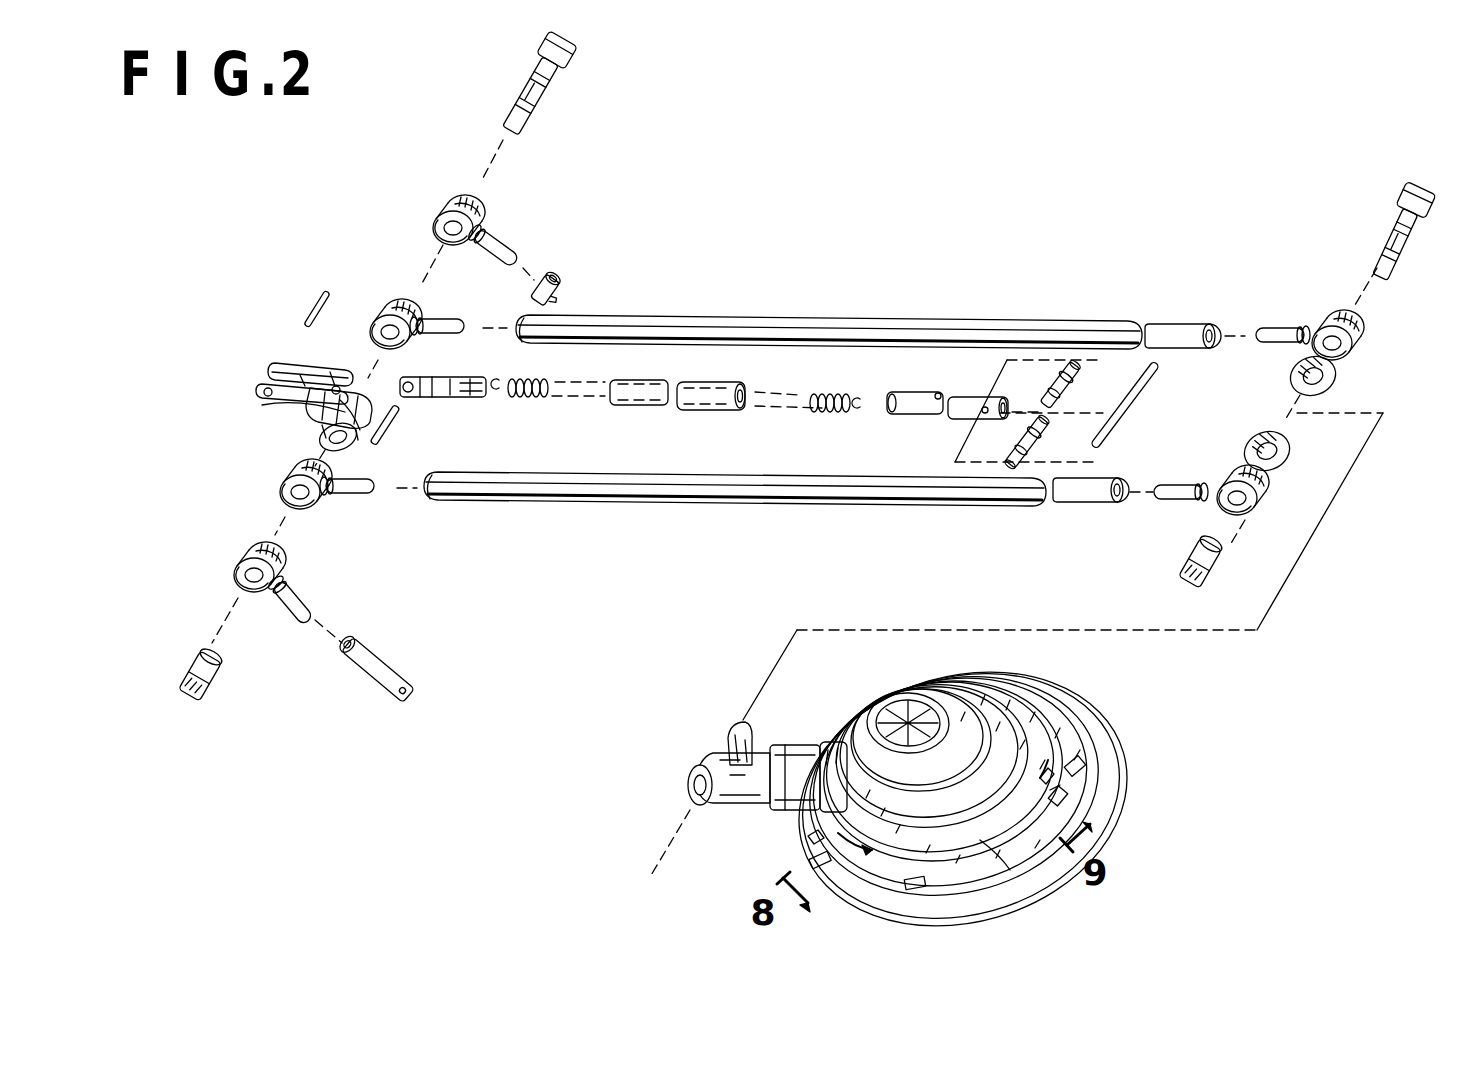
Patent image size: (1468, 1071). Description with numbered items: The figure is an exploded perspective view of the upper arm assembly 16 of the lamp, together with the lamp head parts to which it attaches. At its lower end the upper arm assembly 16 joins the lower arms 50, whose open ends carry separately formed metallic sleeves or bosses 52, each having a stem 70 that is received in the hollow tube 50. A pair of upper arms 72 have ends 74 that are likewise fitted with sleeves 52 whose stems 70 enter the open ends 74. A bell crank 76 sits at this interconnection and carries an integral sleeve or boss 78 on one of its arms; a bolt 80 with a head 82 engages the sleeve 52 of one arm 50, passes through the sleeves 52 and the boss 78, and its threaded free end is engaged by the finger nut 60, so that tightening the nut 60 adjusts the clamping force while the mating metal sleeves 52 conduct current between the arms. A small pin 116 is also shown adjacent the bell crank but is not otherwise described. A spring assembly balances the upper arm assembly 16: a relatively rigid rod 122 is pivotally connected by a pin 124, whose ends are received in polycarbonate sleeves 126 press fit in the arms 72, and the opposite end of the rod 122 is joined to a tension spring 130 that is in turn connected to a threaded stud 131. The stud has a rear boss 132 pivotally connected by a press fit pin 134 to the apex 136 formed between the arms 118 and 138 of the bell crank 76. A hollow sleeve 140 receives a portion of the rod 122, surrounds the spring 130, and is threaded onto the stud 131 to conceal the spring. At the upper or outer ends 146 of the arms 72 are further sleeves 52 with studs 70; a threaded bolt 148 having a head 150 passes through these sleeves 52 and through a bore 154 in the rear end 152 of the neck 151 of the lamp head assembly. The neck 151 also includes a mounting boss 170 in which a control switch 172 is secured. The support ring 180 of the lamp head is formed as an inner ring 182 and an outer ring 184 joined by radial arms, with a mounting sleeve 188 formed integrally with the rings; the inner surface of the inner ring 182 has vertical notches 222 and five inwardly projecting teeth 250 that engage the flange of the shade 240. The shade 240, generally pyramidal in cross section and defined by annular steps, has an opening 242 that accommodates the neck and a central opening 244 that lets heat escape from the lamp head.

The upper arm assembly 16 is at (555, 506).
The arm 50 is at (556, 282).
The sleeve 52 is at (445, 207).
The finger nut 60 is at (203, 687).
The stem 70 is at (507, 242).
The upper arm 72 is at (682, 318).
The arm end 74 is at (527, 343).
The bell crank 76 is at (262, 405).
The boss 78 is at (350, 395).
The bolt 80 is at (548, 92).
The bolt head 82 is at (572, 56).
The pin 116 is at (312, 292).
The bell crank arm 118 is at (317, 363).
The rod 122 is at (960, 419).
The pin 124 is at (1143, 407).
The polycarbonate sleeve 126 is at (1048, 375).
The tension spring 130 is at (533, 397).
The threaded stud 131 is at (452, 390).
The rear boss 132 is at (425, 377).
The press fit pin 134 is at (392, 422).
The apex 136 is at (372, 383).
The bell crank arm 138 is at (330, 410).
The hollow sleeve 140 is at (692, 412).
The outer arm end 146 is at (1190, 322).
The threaded bolt 148 is at (1395, 222).
The bolt head 150 is at (1410, 183).
The neck 151 is at (763, 745).
The rear end 152 is at (1183, 583).
The bore 154 is at (1293, 374).
The mounting boss 170 is at (705, 765).
The control switch 172 is at (725, 740).
The support ring 180 is at (1096, 736).
The inner ring 182 is at (996, 846).
The outer ring 184 is at (1107, 791).
The mounting sleeve 188 is at (796, 750).
The vertical notch 222 is at (1086, 768).
The shade 240 is at (1030, 686).
The neck opening 242 is at (843, 742).
The central opening 244 is at (886, 705).
The inwardly projecting tooth 250 is at (1070, 795).